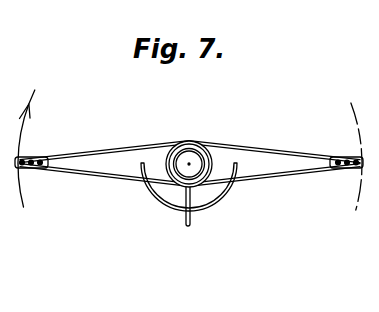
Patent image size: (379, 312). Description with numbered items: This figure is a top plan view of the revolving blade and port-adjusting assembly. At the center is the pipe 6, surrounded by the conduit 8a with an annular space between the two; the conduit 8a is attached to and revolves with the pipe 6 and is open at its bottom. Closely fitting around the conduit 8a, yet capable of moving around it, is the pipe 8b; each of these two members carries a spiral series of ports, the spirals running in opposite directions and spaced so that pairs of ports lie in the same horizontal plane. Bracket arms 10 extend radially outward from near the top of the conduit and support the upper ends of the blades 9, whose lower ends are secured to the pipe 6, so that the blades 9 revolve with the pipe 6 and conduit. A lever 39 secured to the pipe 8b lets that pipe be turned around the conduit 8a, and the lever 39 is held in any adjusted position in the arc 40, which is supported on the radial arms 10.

The pipe 6 is at (203, 147).
The conduit 8a is at (190, 142).
The pipe 8b is at (173, 147).
The blade 9 is at (50, 166).
The bracket arm 10 is at (103, 151).
The lever 39 is at (183, 211).
The arc 40 is at (212, 208).